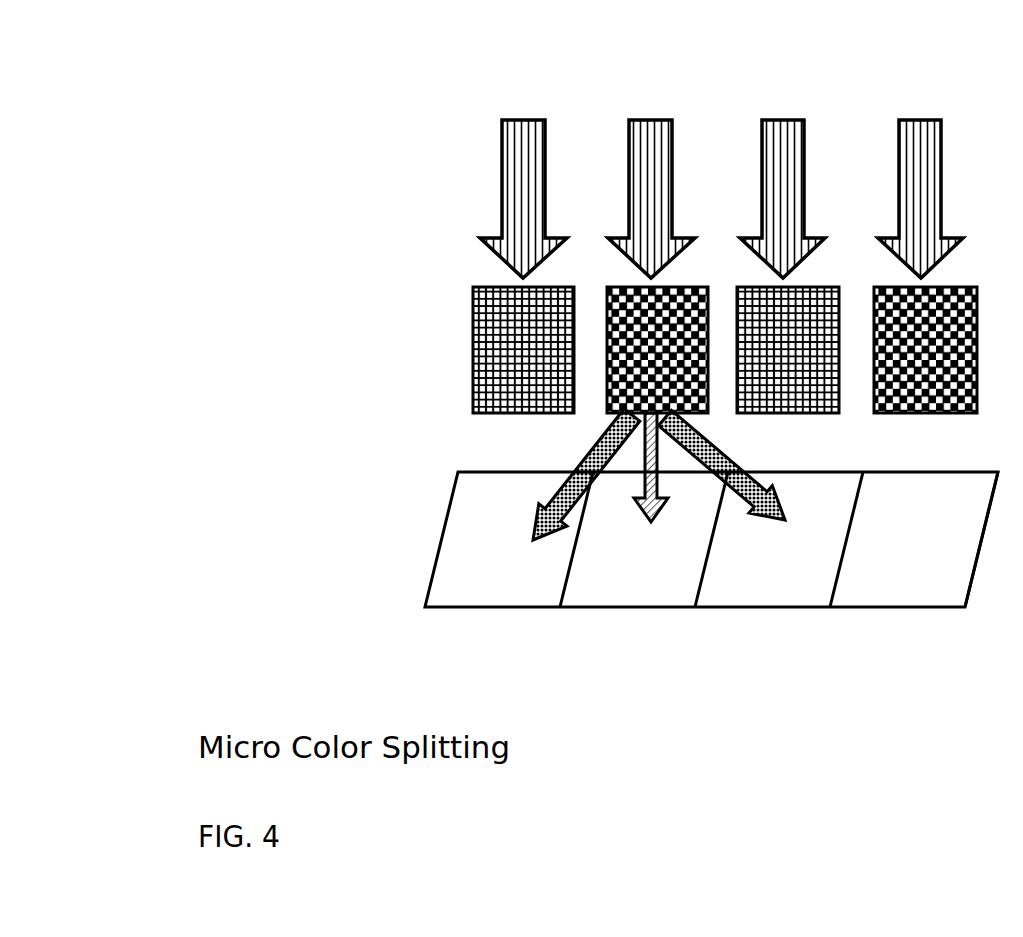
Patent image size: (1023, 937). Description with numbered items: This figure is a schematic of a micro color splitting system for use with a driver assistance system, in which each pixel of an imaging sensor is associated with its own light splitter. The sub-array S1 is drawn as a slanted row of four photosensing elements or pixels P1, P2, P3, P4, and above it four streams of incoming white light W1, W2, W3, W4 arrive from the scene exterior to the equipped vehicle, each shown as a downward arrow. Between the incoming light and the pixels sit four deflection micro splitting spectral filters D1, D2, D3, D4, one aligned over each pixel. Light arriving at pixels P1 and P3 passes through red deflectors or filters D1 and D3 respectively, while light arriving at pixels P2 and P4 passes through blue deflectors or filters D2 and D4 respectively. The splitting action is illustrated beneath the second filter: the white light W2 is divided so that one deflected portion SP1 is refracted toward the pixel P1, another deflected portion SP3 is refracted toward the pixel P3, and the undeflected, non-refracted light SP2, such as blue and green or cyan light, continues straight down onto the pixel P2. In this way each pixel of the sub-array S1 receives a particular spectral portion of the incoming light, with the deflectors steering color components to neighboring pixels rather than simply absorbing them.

The white light W1 is at (524, 152).
The white light W2 is at (652, 152).
The white light W3 is at (784, 152).
The white light W4 is at (922, 151).
The red deflector D1 is at (503, 350).
The blue deflector D2 is at (642, 350).
The red deflector D3 is at (774, 350).
The blue deflector D4 is at (910, 350).
The red light SP1 is at (586, 474).
The undeflected light SP2 is at (649, 481).
The red light SP3 is at (722, 465).
The sub-array S1 is at (352, 552).
The pixel P1 is at (535, 569).
The pixel P2 is at (666, 569).
The pixel P3 is at (798, 569).
The pixel P4 is at (936, 569).